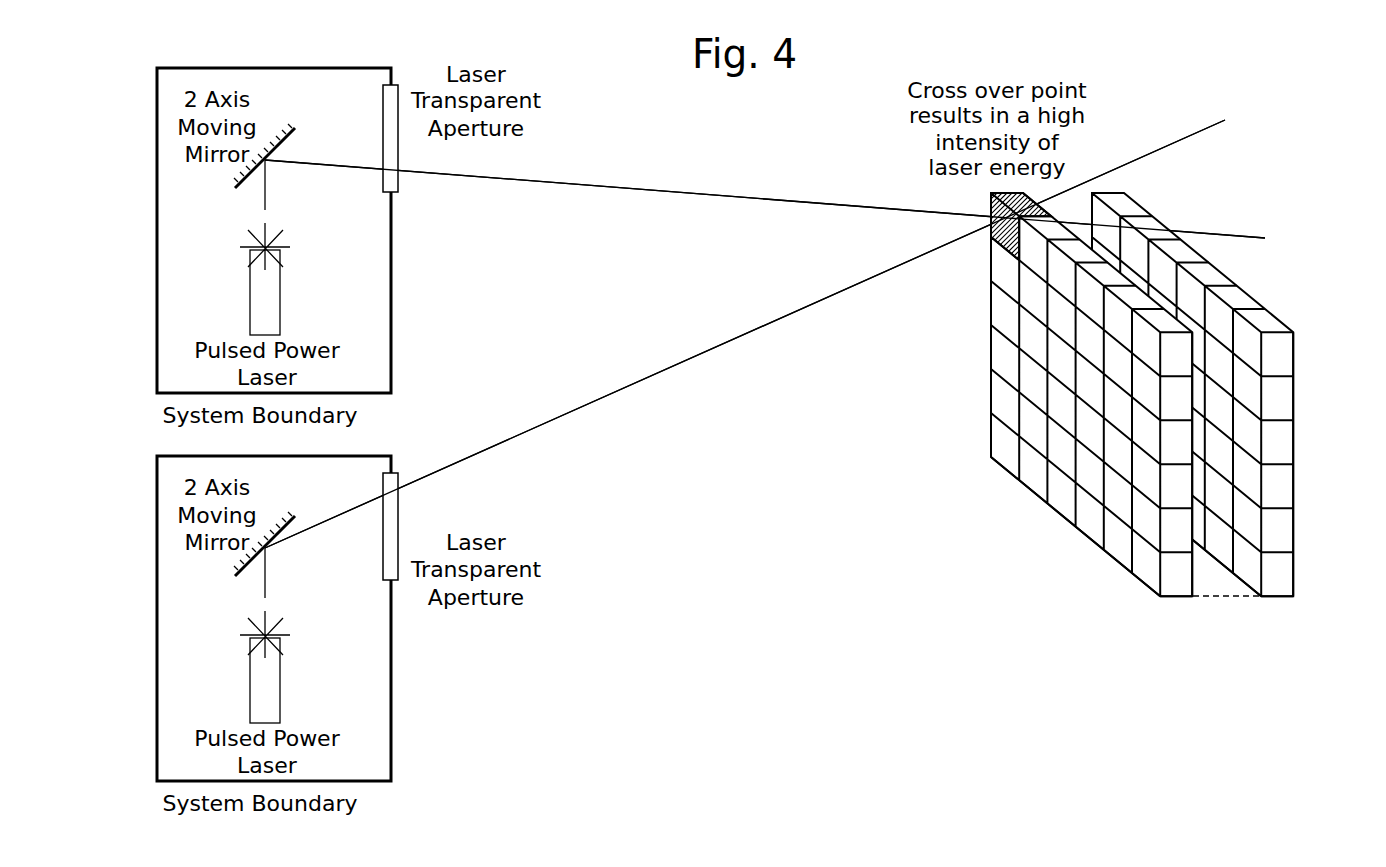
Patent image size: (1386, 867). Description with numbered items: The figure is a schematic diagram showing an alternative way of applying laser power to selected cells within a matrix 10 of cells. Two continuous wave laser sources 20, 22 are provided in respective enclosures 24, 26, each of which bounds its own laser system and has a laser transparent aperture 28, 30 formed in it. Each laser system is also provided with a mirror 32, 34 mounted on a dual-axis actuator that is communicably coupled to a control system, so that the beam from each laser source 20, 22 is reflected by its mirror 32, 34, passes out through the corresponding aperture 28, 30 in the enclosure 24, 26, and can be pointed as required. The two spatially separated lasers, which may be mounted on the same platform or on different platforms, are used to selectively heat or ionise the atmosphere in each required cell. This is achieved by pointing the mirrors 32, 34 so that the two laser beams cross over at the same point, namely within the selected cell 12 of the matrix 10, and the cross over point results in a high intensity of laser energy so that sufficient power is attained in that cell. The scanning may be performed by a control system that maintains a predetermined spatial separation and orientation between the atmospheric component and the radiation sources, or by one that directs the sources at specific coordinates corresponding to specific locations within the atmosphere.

The target structure of blocks 10 is at (1290, 303).
The selected cell 12 is at (1004, 236).
The CW laser source 20 is at (272, 300).
The CW laser source 22 is at (272, 688).
The enclosure 24 is at (391, 315).
The enclosure 26 is at (391, 703).
The laser transparent aperture 28 is at (395, 183).
The laser transparent aperture 30 is at (395, 520).
The mirror 32 is at (247, 190).
The mirror 34 is at (247, 578).